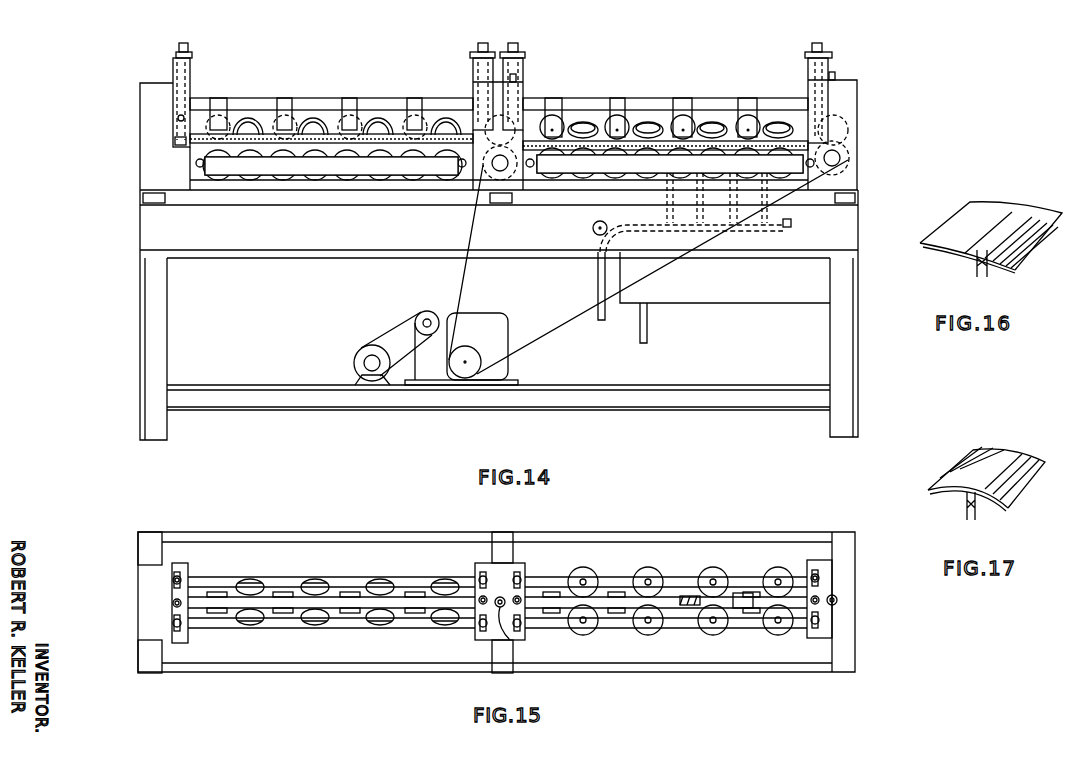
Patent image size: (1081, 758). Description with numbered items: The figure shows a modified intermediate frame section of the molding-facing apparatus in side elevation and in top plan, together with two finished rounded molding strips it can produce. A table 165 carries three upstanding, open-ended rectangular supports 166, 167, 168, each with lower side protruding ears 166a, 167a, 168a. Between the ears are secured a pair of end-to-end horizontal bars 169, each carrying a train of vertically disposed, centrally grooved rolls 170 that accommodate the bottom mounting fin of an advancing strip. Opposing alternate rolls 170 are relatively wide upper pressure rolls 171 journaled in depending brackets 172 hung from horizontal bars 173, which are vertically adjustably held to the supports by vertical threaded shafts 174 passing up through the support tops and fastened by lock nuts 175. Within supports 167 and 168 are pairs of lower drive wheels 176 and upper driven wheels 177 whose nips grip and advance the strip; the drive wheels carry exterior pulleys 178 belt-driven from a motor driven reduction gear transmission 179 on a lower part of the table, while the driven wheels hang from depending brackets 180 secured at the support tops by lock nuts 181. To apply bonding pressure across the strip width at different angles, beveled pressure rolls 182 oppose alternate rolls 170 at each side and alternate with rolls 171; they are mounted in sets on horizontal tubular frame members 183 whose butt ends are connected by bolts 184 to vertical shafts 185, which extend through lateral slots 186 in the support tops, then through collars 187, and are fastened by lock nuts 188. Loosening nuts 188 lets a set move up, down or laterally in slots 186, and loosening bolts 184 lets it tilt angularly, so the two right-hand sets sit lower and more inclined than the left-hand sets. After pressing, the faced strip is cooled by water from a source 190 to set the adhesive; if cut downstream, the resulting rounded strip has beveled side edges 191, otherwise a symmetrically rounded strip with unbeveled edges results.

In FIG. 14, the table 165 is at (148, 223).
In FIG. 15, the table 165 is at (150, 548).
In FIG. 14, the upstanding support 166 is at (143, 92).
In FIG. 15, the upstanding support 166 is at (143, 592).
In FIG. 14, the ear 166a is at (190, 177).
In FIG. 14, the upstanding support 167 is at (473, 95).
In FIG. 15, the upstanding support 167 is at (493, 570).
In FIG. 14, the ear 167a is at (470, 175).
In FIG. 14, the upstanding support 168 is at (812, 93).
In FIG. 15, the upstanding support 168 is at (848, 575).
In FIG. 14, the ear 168a is at (806, 192).
In FIG. 14, the horizontal bar 169 is at (298, 180).
In FIG. 14, the roll 170 is at (285, 180).
In FIG. 15, the roll 170 is at (690, 602).
In FIG. 14, the upper pressure roll 171 is at (210, 128).
In FIG. 15, the upper pressure roll 171 is at (692, 606).
In FIG. 14, the depending bracket 172 is at (286, 104).
In FIG. 15, the depending bracket 172 is at (356, 611).
In FIG. 14, the horizontal bar 173 is at (375, 128).
In FIG. 15, the horizontal bar 173 is at (336, 606).
In FIG. 15, the vertical threaded shaft 174 is at (175, 603).
In FIG. 15, the lock nut 175 is at (175, 609).
In FIG. 14, the drive wheel 176 is at (483, 125).
In FIG. 14, the driven wheel 177 is at (488, 118).
In FIG. 14, the pulley 178 is at (500, 173).
In FIG. 14, the motor driven reduction gear transmission 179 is at (440, 322).
In FIG. 14, the depending bracket 180 is at (502, 118).
In FIG. 15, the depending bracket 180 is at (501, 605).
In FIG. 14, the lock nut 181 is at (505, 100).
In FIG. 15, the lock nut 181 is at (505, 614).
In FIG. 14, the beveled pressure roll 182 is at (330, 128).
In FIG. 15, the beveled pressure roll 182 is at (375, 583).
In FIG. 14, the tubular frame member 183 is at (285, 128).
In FIG. 15, the tubular frame member 183 is at (421, 580).
In FIG. 14, the bolt 184 is at (175, 142).
In FIG. 14, the vertical shaft 185 is at (180, 117).
In FIG. 15, the vertical shaft 185 is at (172, 583).
In FIG. 15, the lateral slot 186 is at (181, 575).
In FIG. 14, the collar 187 is at (176, 63).
In FIG. 14, the lock nut 188 is at (186, 49).
In FIG. 15, the lock nut 188 is at (176, 622).
In FIG. 14, the water source 190 is at (598, 280).
In FIG. 16, the beveled side edge 191 is at (922, 243).